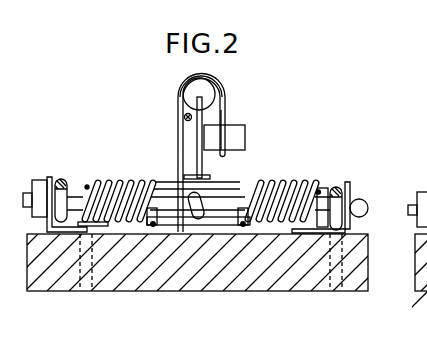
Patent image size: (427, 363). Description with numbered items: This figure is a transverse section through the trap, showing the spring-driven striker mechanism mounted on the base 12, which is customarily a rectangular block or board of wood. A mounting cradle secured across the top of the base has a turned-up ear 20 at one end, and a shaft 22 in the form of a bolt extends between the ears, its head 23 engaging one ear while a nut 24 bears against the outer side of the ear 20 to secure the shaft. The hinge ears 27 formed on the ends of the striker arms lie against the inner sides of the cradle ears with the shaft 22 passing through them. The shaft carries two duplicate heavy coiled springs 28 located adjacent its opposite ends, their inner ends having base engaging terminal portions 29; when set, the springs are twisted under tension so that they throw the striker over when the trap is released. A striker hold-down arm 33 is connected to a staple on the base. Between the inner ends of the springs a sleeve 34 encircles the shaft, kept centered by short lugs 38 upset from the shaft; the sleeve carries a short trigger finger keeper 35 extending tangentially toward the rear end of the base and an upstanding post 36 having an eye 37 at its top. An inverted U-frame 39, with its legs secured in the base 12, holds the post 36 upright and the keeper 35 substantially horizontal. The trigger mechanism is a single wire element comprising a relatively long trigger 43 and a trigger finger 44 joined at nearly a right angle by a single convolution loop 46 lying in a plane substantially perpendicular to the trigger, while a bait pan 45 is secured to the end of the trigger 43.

The base 12 is at (360, 282).
The ear 20 is at (51, 179).
The shaft 22 is at (323, 202).
The head 23 is at (368, 212).
The nut 24 is at (40, 181).
The hinge ears 27 is at (337, 210).
The coiled springs 28 is at (122, 179).
The base engaging terminal portions 29 is at (243, 228).
The striker hold-down arm 33 is at (185, 116).
The sleeve 34 is at (195, 224).
The trigger finger keeper 35 is at (177, 195).
The upstanding post 36 is at (203, 165).
The eye 37 is at (208, 100).
The lugs 38 is at (168, 212).
The inverted U-frame 39 is at (239, 179).
The trigger 43 is at (226, 115).
The trigger finger 44 is at (180, 158).
The pan 45 is at (237, 135).
The single convolution loop 46 is at (188, 78).